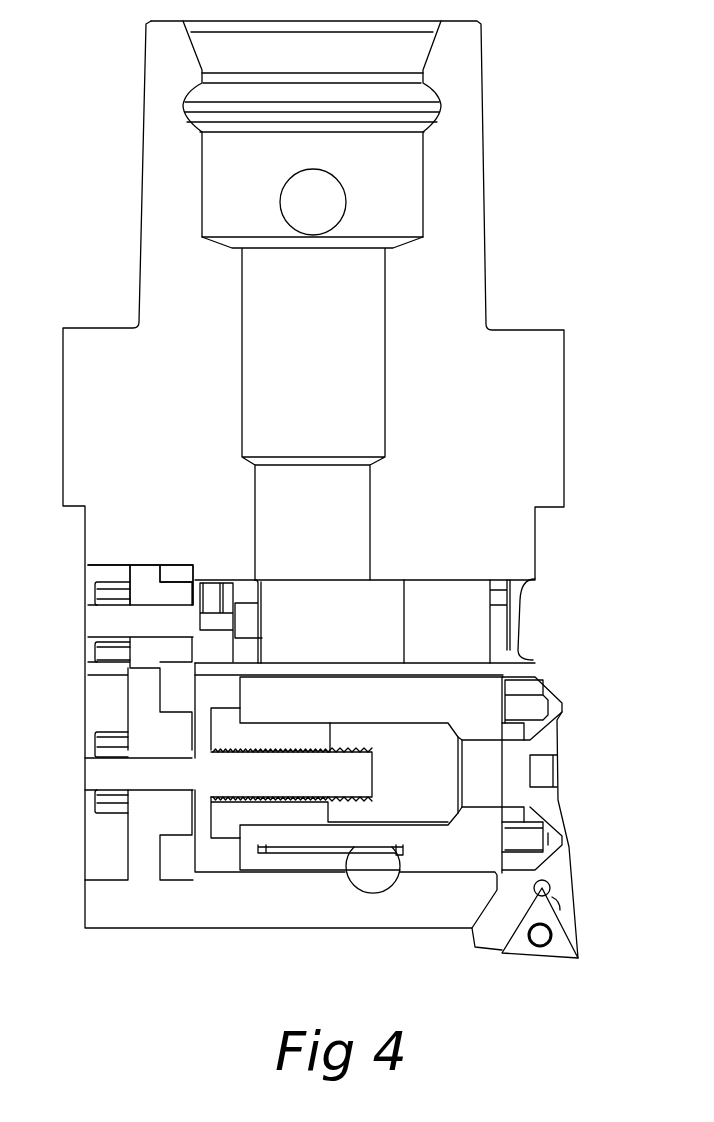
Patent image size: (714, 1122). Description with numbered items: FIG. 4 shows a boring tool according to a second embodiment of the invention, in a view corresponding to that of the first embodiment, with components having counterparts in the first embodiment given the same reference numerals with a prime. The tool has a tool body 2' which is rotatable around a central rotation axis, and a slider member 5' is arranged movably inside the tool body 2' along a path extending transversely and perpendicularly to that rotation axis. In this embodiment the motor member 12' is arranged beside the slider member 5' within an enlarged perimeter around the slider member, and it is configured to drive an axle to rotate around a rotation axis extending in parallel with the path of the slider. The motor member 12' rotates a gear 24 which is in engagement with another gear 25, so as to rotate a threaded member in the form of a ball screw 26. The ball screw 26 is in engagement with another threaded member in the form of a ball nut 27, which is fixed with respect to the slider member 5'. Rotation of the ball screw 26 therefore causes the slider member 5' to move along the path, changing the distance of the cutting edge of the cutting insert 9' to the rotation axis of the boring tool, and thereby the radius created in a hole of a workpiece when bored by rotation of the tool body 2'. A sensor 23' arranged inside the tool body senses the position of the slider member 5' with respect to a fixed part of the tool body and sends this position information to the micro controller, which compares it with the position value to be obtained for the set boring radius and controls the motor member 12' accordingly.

The tool body 2' is at (313, 485).
The motor member 12' is at (398, 595).
The gear 24 is at (140, 582).
The gear 25 is at (137, 843).
The ball screw 26 is at (352, 758).
The ball nut 27 is at (292, 733).
The slider member 5' is at (524, 796).
The sensor 23' is at (347, 877).
The cutting insert 9' is at (564, 919).